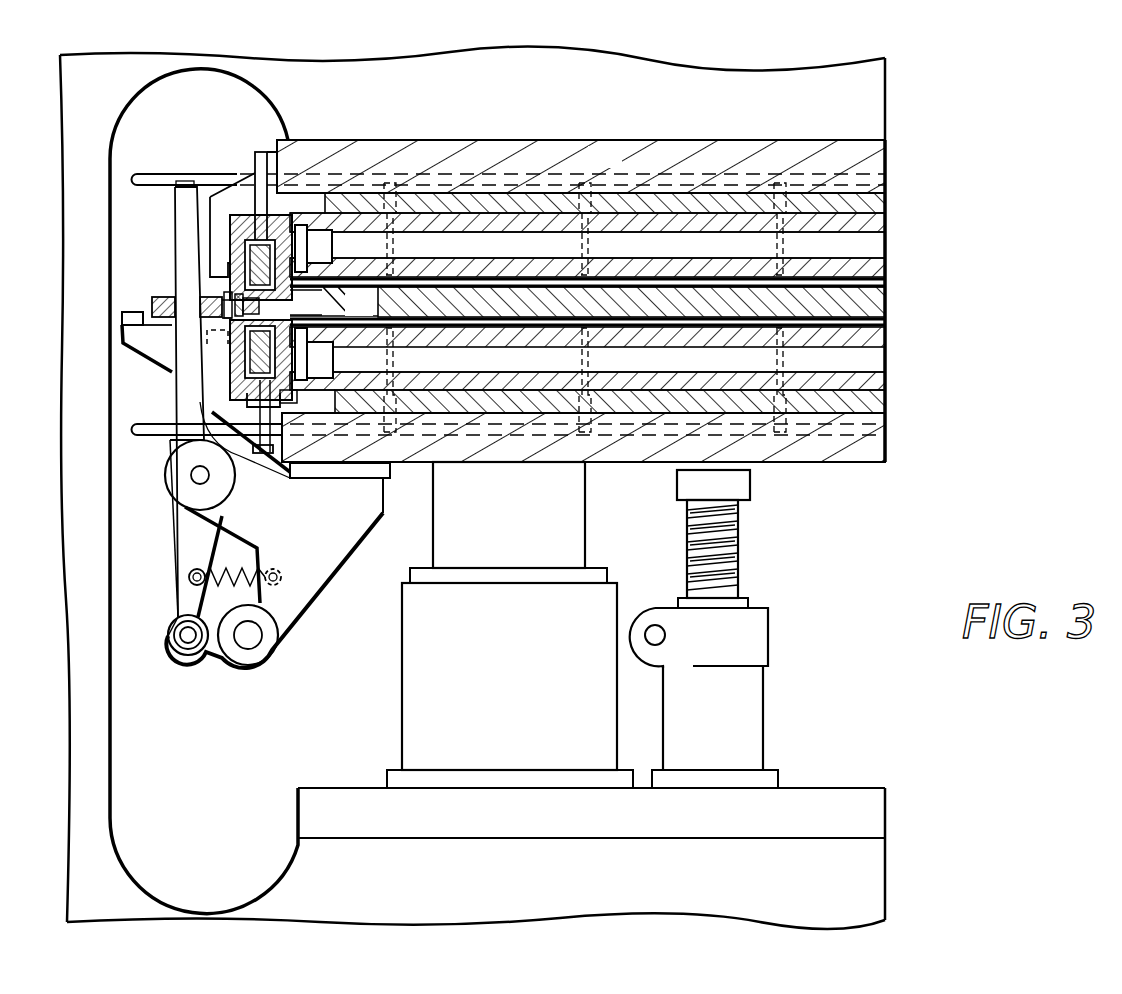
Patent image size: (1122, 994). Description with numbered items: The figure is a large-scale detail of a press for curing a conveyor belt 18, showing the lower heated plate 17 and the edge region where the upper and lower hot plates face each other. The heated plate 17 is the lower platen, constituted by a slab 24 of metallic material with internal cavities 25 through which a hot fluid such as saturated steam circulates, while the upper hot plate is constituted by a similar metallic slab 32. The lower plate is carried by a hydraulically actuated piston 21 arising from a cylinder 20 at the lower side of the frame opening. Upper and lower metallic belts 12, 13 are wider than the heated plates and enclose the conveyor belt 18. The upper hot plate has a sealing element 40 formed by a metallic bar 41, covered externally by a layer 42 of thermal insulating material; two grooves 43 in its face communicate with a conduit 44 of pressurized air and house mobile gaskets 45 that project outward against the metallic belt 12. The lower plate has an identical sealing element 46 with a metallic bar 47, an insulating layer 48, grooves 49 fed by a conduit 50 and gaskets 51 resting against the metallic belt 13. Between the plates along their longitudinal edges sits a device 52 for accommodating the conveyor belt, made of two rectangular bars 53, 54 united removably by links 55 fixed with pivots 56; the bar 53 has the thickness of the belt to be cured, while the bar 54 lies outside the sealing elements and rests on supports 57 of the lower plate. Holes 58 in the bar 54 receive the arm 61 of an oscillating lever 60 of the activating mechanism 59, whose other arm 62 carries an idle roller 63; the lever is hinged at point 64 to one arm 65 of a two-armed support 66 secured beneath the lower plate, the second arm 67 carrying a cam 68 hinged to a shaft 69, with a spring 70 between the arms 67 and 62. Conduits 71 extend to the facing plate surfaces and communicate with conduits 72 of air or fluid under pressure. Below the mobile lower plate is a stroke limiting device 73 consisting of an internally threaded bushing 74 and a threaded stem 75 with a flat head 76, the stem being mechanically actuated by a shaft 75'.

The metallic belt 12 is at (880, 283).
The metallic belt 13 is at (872, 328).
The heated plate 17 is at (876, 344).
The conveyor belt 18 is at (872, 310).
The cylinder 20 is at (402, 645).
The piston 21 is at (570, 518).
The slab 24 is at (870, 376).
The cavity 25 is at (870, 398).
The slab 32 is at (872, 220).
The sealing element 40 is at (230, 243).
The metallic bar 41 is at (245, 245).
The layer of thermal insulating material 42 is at (226, 190).
The groove 43 is at (322, 222).
The conduit of pressurized air 44 is at (258, 158).
The gasket 45 is at (256, 300).
The sealing element 46 is at (230, 372).
The metallic bar 47 is at (280, 396).
The layer of thermal insulating material 48 is at (232, 400).
The groove 49 is at (244, 397).
The conduit of air under pressure 50 is at (256, 458).
The gasket 51 is at (289, 300).
The device for accommodating the conveyor belt 52 is at (403, 298).
The bar of rectangular section 53 is at (373, 301).
The bar of rectangular section 54 is at (158, 312).
The link 55 is at (212, 338).
The pivot 56 is at (224, 300).
The support 57 is at (122, 318).
The hole 58 is at (160, 327).
The activating mechanism 59 is at (200, 522).
The oscillating lever 60 is at (190, 518).
The arm 61 is at (184, 196).
The arm 62 is at (187, 577).
The idle roller 63 is at (168, 636).
The hinge point 64 is at (191, 472).
The arm 65 is at (285, 541).
The two-armed support 66 is at (318, 582).
The arm 67 is at (280, 630).
The cam 68 is at (212, 652).
The shaft 69 is at (252, 642).
The spring 70 is at (236, 588).
The conduit 71 is at (588, 182).
The conduit of air or fluid under pressure 72 is at (868, 166).
The stroke limiting device 73 is at (772, 642).
The internally threaded bushing 74 is at (740, 692).
The threaded stem 75 is at (733, 549).
The shaft 75' is at (645, 611).
The flat head 76 is at (872, 277).